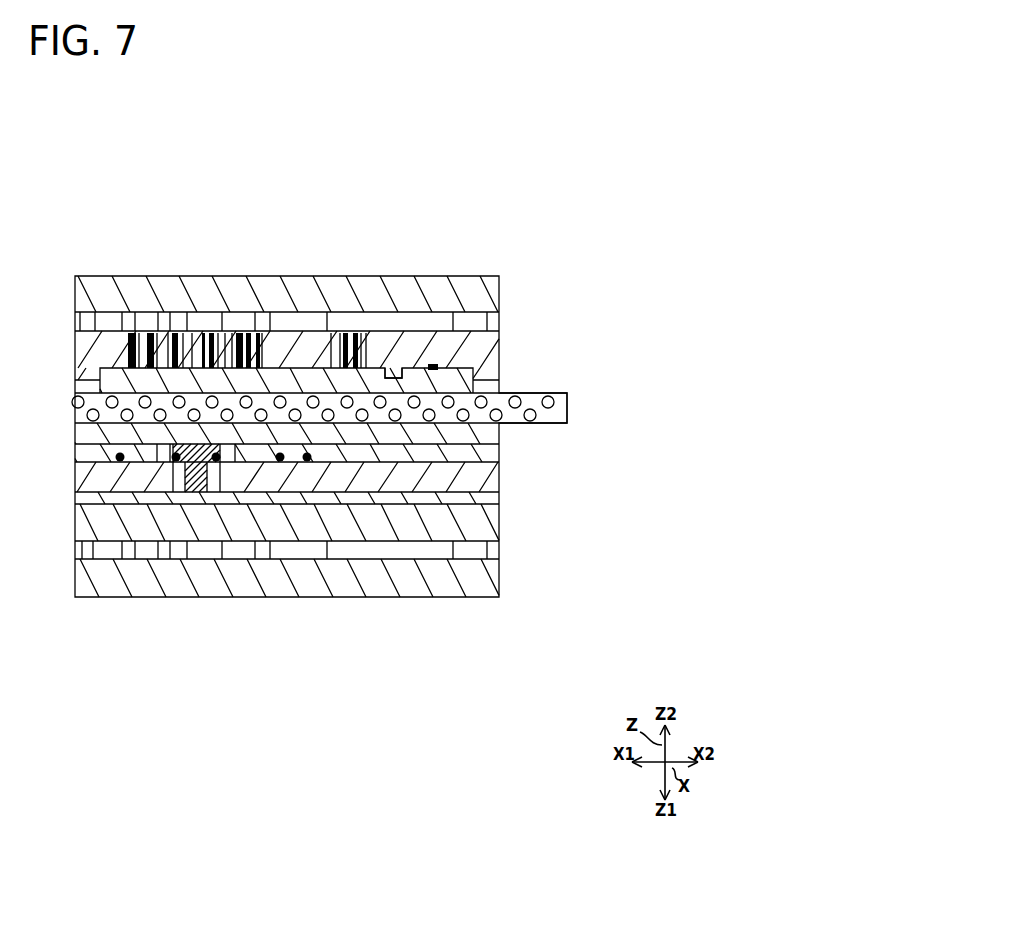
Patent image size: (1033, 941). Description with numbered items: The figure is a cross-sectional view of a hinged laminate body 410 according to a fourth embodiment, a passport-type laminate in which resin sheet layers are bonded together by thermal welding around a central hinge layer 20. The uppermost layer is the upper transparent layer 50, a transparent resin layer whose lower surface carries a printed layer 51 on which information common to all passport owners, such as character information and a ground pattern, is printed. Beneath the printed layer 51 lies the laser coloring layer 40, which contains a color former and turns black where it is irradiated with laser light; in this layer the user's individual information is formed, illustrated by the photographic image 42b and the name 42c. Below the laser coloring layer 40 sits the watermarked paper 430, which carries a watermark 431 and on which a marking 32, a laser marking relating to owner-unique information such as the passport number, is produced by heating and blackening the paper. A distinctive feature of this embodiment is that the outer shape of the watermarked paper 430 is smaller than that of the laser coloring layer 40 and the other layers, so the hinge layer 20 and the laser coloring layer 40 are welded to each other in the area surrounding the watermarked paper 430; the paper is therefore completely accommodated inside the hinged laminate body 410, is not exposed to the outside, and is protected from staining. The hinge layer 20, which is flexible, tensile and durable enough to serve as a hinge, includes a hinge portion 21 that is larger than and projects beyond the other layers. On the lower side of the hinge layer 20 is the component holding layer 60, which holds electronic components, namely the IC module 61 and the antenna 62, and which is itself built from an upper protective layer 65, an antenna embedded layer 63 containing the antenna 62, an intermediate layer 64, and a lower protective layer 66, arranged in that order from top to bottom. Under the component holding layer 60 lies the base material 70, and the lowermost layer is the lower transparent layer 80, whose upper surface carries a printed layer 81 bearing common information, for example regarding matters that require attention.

The hinged laminate body 410 is at (567, 67).
The marking 32 is at (435, 365).
The photographic image 42b is at (220, 345).
The name 42c is at (332, 345).
The upper transparent layer 50 is at (491, 297).
The printed layer 51 is at (491, 322).
The laser coloring layer 40 is at (466, 310).
The watermarked paper 430 is at (476, 444).
The watermark 431 is at (396, 380).
The hinge layer 20 is at (442, 424).
The hinge portion 21 is at (567, 423).
The component holding layer 60 is at (316, 474).
The upper protective layer 65 is at (499, 432).
The antenna embedded layer 63 is at (289, 474).
The intermediate layer 64 is at (499, 478).
The lower protective layer 66 is at (320, 508).
The antenna 62 is at (120, 457).
The IC module 61 is at (175, 466).
The base material 70 is at (499, 533).
The printed layer 81 is at (499, 552).
The lower transparent layer 80 is at (499, 580).